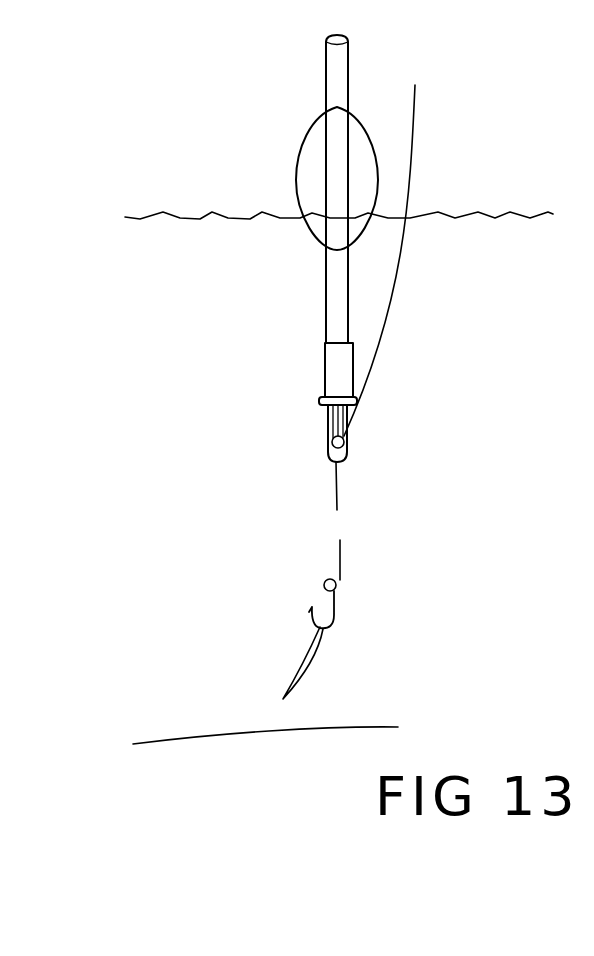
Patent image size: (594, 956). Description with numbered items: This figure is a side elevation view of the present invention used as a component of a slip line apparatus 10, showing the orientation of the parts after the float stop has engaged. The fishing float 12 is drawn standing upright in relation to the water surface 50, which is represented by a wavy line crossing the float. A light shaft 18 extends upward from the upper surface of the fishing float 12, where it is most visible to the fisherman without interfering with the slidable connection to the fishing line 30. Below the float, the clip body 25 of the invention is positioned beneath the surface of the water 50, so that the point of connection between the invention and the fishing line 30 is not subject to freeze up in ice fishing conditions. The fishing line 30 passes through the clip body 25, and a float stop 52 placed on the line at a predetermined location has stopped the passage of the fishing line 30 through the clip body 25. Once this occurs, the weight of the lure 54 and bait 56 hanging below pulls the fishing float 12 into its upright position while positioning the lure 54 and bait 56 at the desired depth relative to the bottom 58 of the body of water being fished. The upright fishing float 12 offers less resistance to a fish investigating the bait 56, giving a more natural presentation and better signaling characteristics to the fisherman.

The slip line apparatus 10 is at (433, 318).
The fishing float 12 is at (380, 148).
The light shaft 18 is at (358, 63).
The clip body 25 is at (323, 424).
The fishing line 30 is at (341, 483).
The water surface 50 is at (218, 207).
The float stop 52 is at (346, 440).
The lure 54 is at (337, 595).
The bait 56 is at (318, 655).
The bottom 58 is at (253, 733).